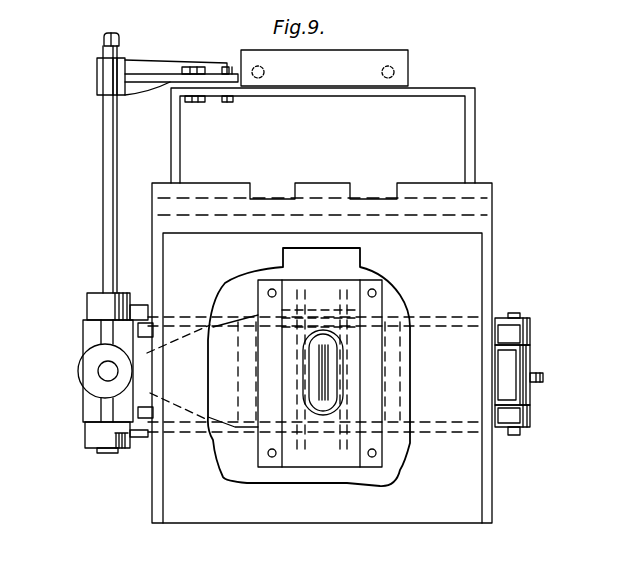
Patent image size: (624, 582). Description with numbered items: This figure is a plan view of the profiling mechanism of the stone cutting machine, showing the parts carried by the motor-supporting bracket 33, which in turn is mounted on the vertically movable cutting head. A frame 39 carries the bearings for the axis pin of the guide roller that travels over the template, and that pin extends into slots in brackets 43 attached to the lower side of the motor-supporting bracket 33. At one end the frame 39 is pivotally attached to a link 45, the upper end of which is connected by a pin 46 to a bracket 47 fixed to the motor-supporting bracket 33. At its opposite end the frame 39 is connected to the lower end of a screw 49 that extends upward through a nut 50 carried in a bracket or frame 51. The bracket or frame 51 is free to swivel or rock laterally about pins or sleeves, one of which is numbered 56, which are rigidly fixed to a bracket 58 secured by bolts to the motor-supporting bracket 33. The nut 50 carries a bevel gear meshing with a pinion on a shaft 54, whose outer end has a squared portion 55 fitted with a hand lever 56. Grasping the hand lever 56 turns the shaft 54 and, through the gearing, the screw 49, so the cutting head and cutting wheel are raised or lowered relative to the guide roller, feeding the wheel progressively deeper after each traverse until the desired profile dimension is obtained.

The motor-supporting bracket 33 is at (476, 478).
The frame 39 is at (446, 318).
The brackets 43 is at (275, 287).
The link 45 is at (527, 420).
The pin 46 is at (515, 312).
The bracket 47 is at (498, 370).
The screw 49 is at (103, 372).
The nut 50 is at (88, 368).
The bracket or frame 51 is at (97, 293).
The shaft 54 is at (106, 157).
The squared portion 55 is at (104, 38).
The hand lever 56 is at (108, 455).
The bracket 58 is at (92, 438).